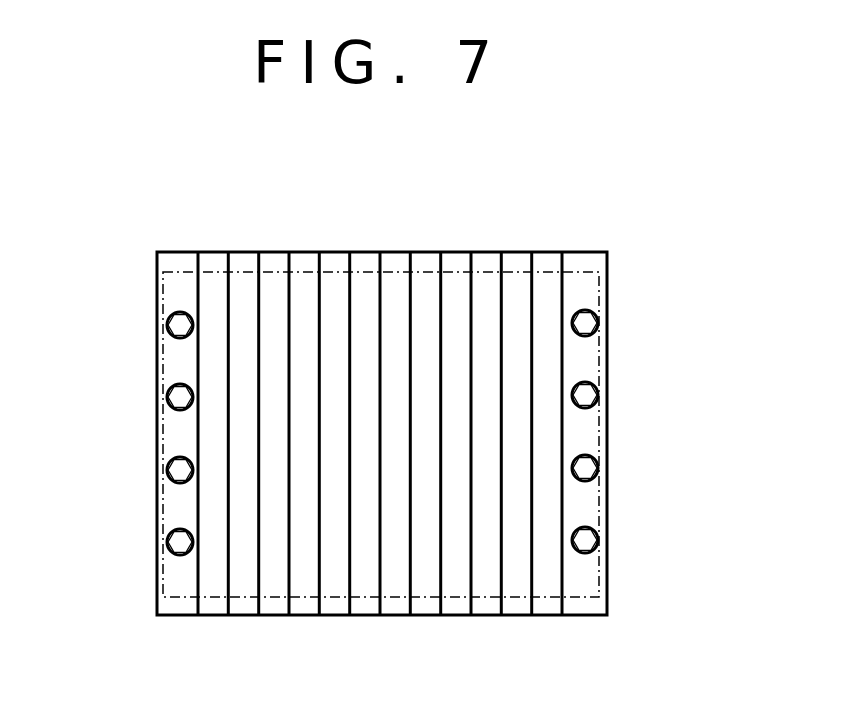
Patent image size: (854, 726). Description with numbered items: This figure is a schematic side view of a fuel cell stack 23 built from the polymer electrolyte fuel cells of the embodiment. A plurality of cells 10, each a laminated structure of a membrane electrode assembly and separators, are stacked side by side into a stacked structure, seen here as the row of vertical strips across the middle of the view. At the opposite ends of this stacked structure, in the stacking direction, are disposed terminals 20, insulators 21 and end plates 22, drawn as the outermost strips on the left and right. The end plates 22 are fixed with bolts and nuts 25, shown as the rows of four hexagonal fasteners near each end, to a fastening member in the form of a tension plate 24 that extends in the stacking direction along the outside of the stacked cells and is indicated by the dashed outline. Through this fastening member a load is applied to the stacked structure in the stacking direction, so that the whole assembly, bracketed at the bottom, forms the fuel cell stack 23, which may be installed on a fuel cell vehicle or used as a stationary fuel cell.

The cell 10 is at (490, 262).
The terminal 20 is at (247, 262).
The insulator 21 is at (213, 262).
The end plate 22 is at (175, 262).
The fuel cell stack 23 is at (607, 619).
The tension plate 24 is at (163, 372).
The bolts and nuts 25 is at (178, 323).